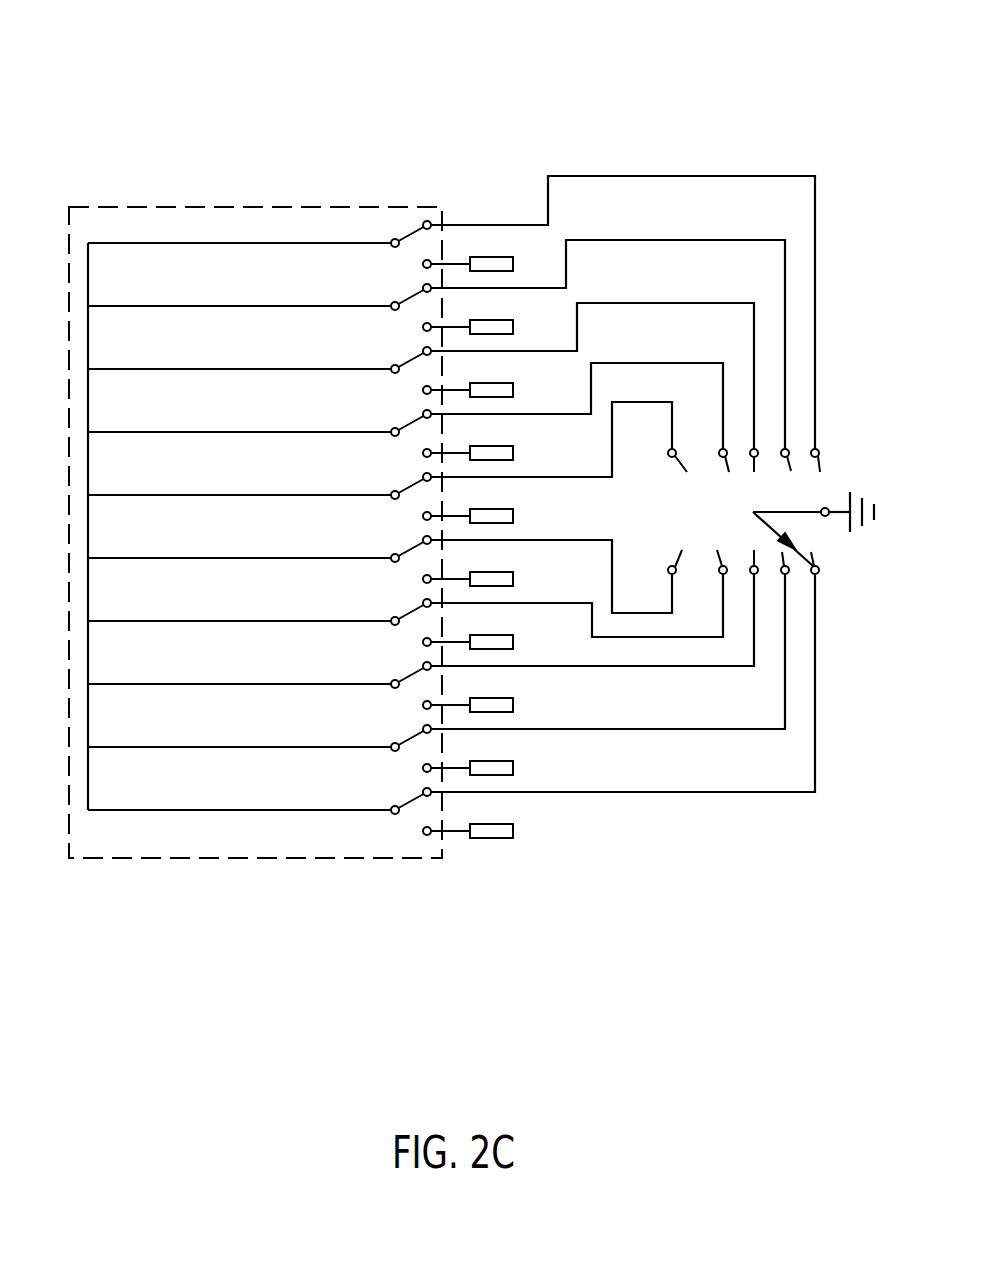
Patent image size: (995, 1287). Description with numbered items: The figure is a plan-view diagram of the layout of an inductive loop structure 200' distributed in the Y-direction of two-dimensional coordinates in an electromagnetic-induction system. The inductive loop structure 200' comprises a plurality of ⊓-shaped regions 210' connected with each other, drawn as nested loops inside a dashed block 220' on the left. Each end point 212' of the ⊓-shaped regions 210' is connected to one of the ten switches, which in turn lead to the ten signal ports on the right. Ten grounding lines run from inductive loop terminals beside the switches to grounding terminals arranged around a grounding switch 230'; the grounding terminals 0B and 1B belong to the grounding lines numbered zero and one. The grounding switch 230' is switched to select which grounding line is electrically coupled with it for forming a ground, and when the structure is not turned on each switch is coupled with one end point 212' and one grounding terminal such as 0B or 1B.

The inductive loop structure 200' is at (479, 510).
The ⊓-shaped regions 210' is at (239, 464).
The switch block 220' is at (255, 488).
The end points 212' is at (458, 617).
The grounding switch 230' is at (821, 549).
The grounding terminal 0B is at (811, 575).
The grounding terminal 1B is at (782, 575).